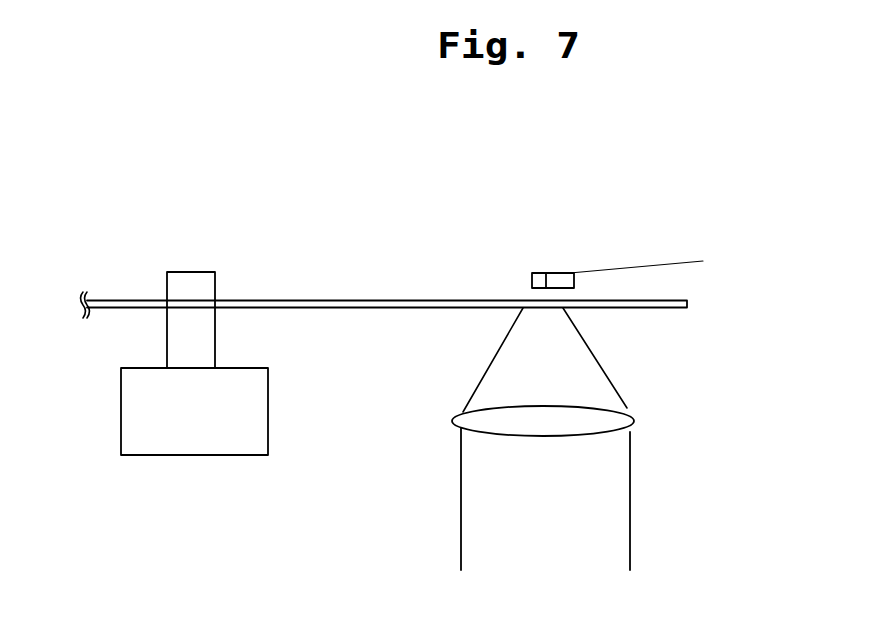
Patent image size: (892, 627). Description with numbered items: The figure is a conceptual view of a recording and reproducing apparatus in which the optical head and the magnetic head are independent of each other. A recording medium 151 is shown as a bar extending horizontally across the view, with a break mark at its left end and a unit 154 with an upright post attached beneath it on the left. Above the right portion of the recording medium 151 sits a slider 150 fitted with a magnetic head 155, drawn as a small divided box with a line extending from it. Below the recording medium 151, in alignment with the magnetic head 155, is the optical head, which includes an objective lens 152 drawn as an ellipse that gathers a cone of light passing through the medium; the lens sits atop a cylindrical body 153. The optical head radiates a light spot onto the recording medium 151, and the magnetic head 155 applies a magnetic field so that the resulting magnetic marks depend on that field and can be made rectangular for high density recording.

The slider 150 is at (562, 277).
The recording medium 151 is at (307, 300).
The objective lens 152 is at (612, 418).
The light receiving unit 153 is at (615, 546).
The drive unit 154 is at (200, 442).
The magnetic head 155 is at (537, 272).